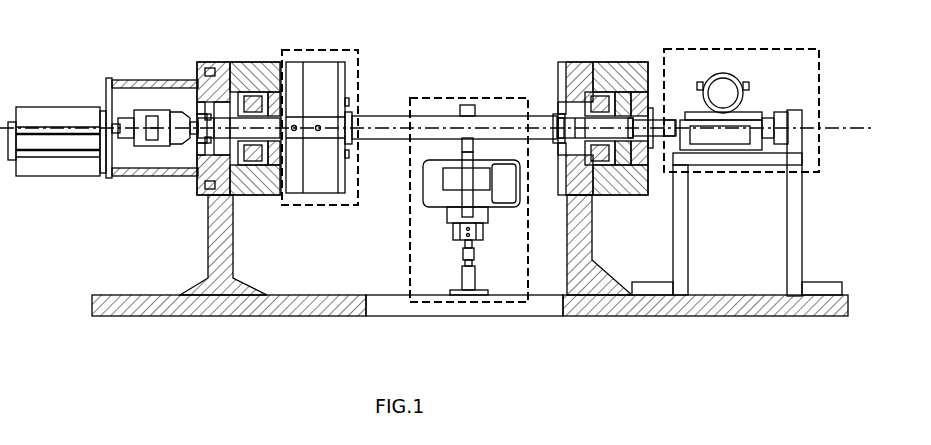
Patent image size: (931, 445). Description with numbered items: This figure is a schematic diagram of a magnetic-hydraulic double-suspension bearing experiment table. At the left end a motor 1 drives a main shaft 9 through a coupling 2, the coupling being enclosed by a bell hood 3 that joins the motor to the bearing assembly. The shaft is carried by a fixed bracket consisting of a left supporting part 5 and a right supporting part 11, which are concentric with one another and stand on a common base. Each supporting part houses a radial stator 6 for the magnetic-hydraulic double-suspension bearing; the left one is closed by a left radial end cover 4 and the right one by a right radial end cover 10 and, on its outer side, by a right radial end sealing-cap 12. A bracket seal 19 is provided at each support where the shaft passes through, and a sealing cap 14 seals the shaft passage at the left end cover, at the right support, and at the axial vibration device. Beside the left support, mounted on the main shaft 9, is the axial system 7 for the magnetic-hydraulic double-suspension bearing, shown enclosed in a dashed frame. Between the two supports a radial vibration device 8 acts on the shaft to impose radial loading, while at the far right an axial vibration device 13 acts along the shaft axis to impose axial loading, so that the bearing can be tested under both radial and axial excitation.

The motor 1 is at (80, 113).
The coupling 2 is at (143, 112).
The bell hood 3 is at (160, 80).
The left radial end cover for magnetic-hydraulic double-suspension bearing 4 is at (220, 67).
The left supporting part of the fixed bracket 5 is at (238, 70).
The radial stator for magnetic-hydraulic double-suspension bearing 6 is at (265, 63).
The axial system for magnetic-hydraulic double-suspension bearing 7 is at (305, 48).
The radial vibration device 8 is at (470, 100).
The main shaft 9 is at (515, 116).
The right radial end cover for magnetic-hydraulic double-suspension bearing 10 is at (560, 63).
The right supporting part of the fixed bracket 11 is at (567, 72).
The right radial end sealing-cap for magnetic-hydraulic double-suspension bearing 12 is at (638, 63).
The axial vibration device 13 is at (727, 48).
The sealing cap 14 is at (196, 104).
The bracket seal 19 is at (193, 143).